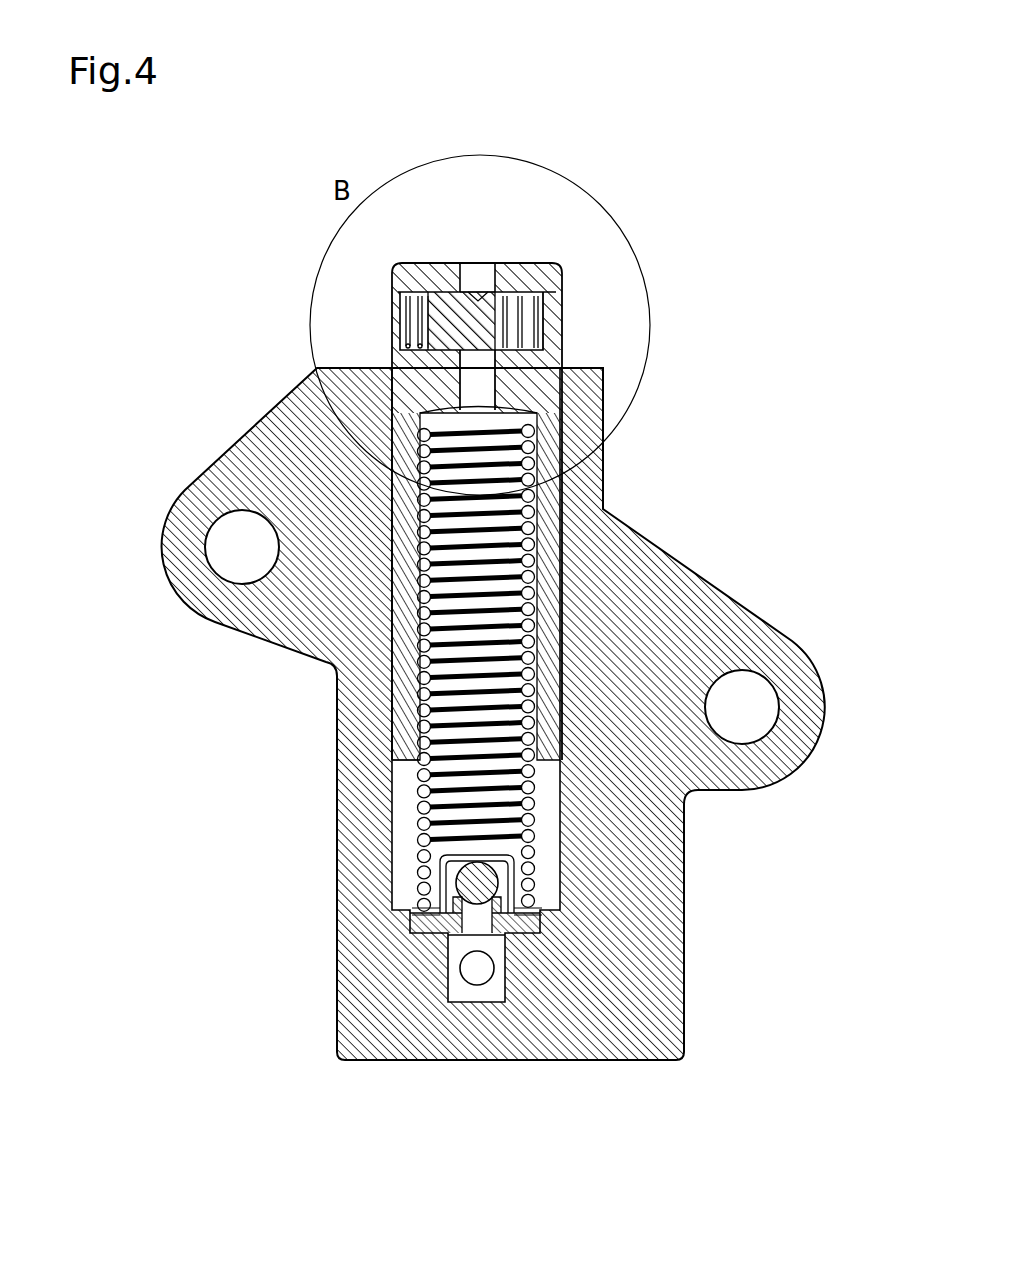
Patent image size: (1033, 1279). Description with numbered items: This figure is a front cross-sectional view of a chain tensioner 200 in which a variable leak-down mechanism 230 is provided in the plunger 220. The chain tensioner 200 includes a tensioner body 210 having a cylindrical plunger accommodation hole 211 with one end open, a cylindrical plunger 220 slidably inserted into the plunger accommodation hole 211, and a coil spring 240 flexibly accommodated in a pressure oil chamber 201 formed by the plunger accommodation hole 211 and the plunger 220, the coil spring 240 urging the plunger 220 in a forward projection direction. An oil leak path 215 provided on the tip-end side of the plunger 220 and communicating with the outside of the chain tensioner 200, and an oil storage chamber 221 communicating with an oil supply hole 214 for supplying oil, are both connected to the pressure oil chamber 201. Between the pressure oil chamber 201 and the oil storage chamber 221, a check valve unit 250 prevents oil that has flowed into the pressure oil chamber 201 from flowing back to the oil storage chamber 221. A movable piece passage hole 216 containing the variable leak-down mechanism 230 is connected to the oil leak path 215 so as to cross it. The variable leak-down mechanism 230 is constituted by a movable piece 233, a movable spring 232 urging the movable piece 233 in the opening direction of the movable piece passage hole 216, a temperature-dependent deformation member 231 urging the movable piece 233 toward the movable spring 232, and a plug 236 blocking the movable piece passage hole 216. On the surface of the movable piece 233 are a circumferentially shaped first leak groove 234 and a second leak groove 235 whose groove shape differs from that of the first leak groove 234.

The chain tensioner 200 is at (149, 238).
The pressure oil chamber 201 is at (417, 573).
The tensioner body 210 is at (313, 595).
The plunger accommodation hole 211 is at (406, 783).
The oil supply hole 214 is at (475, 980).
The oil leak path 215 is at (468, 378).
The movable piece passage hole 216 is at (392, 320).
The plunger 220 is at (462, 578).
The oil storage chamber 221 is at (490, 945).
The variable leak-down mechanism 230 is at (575, 177).
The temperature-dependent deformation member 231 is at (446, 290).
The movable spring 232 is at (563, 290).
The movable piece 233 is at (535, 300).
The first leak groove 234 is at (493, 268).
The second leak groove 235 is at (481, 289).
The plug 236 is at (394, 316).
The coil spring 240 is at (420, 818).
The check valve unit 250 is at (467, 880).